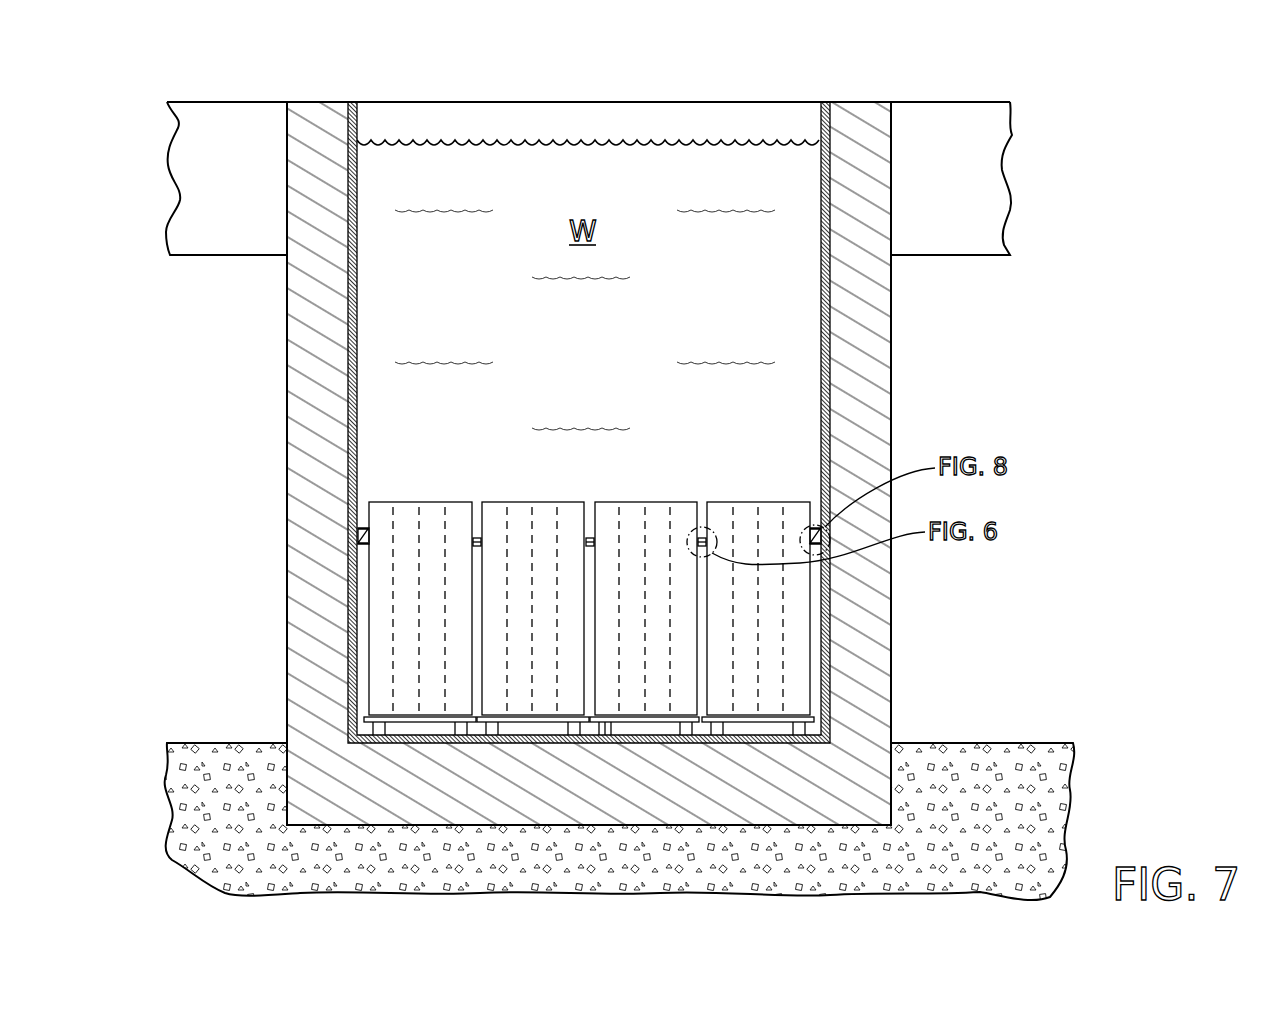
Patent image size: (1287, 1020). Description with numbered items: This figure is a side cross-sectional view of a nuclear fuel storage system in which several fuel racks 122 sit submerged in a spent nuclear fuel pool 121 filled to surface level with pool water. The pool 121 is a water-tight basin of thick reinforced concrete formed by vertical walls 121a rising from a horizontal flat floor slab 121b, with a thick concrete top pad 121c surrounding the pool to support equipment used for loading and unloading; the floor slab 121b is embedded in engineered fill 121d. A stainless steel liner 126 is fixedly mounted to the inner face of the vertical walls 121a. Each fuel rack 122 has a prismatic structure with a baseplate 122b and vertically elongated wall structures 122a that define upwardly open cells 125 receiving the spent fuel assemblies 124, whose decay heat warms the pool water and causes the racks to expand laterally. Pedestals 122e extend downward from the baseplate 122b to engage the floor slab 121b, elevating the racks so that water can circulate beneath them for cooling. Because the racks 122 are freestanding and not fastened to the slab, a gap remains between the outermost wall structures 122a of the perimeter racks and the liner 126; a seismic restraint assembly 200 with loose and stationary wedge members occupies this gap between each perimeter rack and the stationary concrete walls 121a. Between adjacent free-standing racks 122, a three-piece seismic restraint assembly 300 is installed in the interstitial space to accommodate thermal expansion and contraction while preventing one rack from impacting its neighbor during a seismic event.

The spent nuclear fuel pool 121 is at (648, 473).
The vertical walls 121a is at (878, 383).
The floor slab 121b is at (757, 797).
The top pad 121c is at (960, 172).
The engineered fill 121d is at (1040, 756).
The stainless steel liner 126 is at (821, 270).
The fuel rack 122 is at (587, 672).
The vertical wall structures 122a is at (369, 637).
The baseplate 122b is at (535, 722).
The pedestals 122e is at (605, 730).
The fuel assemblies 124 is at (790, 633).
The cells 125 is at (520, 516).
The seismic restraint assembly 200 is at (362, 528).
The three-piece seismic restraint assembly 300 is at (702, 522).